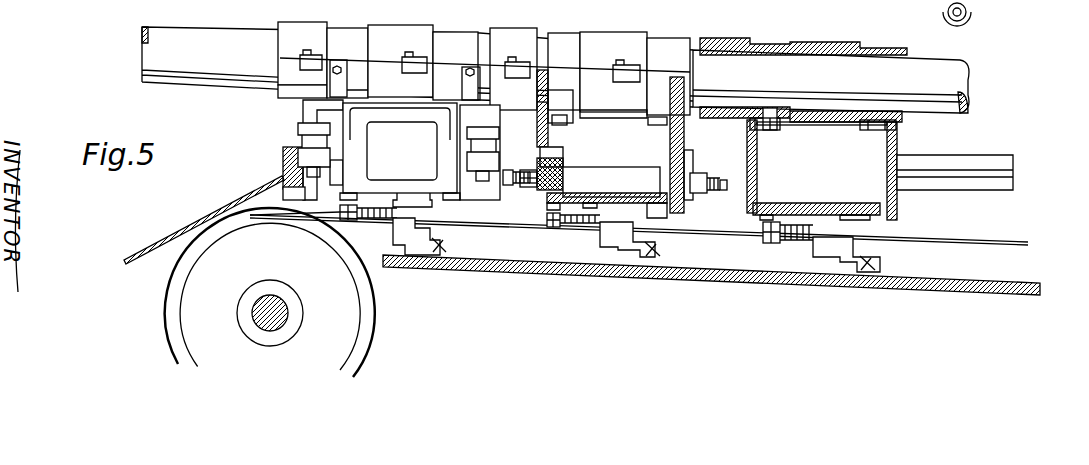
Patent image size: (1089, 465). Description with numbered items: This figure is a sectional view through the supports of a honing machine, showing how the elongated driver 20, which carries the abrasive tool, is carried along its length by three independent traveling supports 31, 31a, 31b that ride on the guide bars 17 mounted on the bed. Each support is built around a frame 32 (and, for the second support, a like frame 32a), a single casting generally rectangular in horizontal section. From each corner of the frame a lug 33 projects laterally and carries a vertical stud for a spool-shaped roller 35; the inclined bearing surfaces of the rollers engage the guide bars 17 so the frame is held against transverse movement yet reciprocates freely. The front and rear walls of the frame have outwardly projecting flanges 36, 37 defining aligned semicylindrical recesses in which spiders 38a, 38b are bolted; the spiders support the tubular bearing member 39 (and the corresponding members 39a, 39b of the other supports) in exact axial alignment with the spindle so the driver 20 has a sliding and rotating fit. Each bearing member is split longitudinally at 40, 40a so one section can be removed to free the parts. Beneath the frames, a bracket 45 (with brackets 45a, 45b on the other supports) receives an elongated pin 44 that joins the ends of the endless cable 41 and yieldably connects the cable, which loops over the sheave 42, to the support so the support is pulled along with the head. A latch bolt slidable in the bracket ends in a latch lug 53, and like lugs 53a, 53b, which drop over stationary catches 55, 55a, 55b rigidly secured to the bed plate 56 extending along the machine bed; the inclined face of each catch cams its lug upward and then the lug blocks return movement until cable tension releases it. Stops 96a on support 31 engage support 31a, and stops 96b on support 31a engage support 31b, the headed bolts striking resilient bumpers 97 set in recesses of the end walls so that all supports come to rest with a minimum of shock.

The guide bars 17 is at (982, 160).
The driver 20 is at (212, 78).
The traveling support 31 is at (428, 31).
The traveling support 31a is at (613, 43).
The traveling support 31b is at (776, 50).
The frame 32 is at (408, 118).
The frame 32a is at (620, 177).
The lug 33 is at (303, 112).
The roller 35 is at (296, 133).
The flange 36 is at (549, 132).
The flange 37 is at (684, 133).
The spider 38a is at (662, 132).
The spider 38b is at (748, 155).
The bearing member 39 is at (357, 30).
The bearing member 39a is at (555, 38).
The bearing member 39b is at (845, 45).
The longitudinal split 40 is at (283, 58).
The longitudinal split 40a is at (690, 70).
The cable 41 is at (968, 240).
The sheave 42 is at (365, 330).
The pin 44 is at (260, 220).
The bracket 45 is at (408, 205).
The bracket 45a is at (598, 222).
The bracket 45b is at (815, 240).
The latch lug 53 is at (400, 237).
The latch lug 53a is at (612, 244).
The latch lug 53b is at (832, 254).
The catch 55 is at (446, 245).
The catch 55a is at (660, 250).
The catch 55b is at (875, 262).
The bed plate 56 is at (745, 275).
The stops 96a is at (523, 180).
The stops 96b is at (720, 190).
The bumper 97 is at (560, 168).